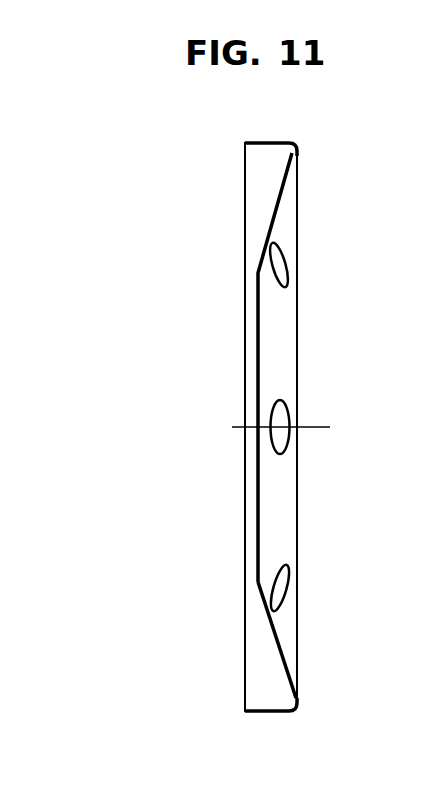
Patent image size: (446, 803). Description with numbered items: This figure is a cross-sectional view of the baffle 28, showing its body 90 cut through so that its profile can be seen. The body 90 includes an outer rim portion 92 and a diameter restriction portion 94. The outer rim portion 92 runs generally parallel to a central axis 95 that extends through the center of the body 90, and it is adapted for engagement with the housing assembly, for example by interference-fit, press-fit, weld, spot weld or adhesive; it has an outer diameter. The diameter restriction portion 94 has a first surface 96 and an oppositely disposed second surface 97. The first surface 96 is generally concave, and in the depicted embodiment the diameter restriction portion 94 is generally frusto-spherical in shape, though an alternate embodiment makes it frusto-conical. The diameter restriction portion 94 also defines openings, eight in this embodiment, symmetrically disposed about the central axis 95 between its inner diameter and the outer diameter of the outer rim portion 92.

The baffle 28 is at (207, 187).
The body 90 is at (329, 196).
The outer rim portion 92 is at (272, 142).
The diameter restriction portion 94 is at (287, 638).
The central axis 95 is at (313, 427).
The first surface 96 is at (280, 508).
The second surface 97 is at (268, 631).